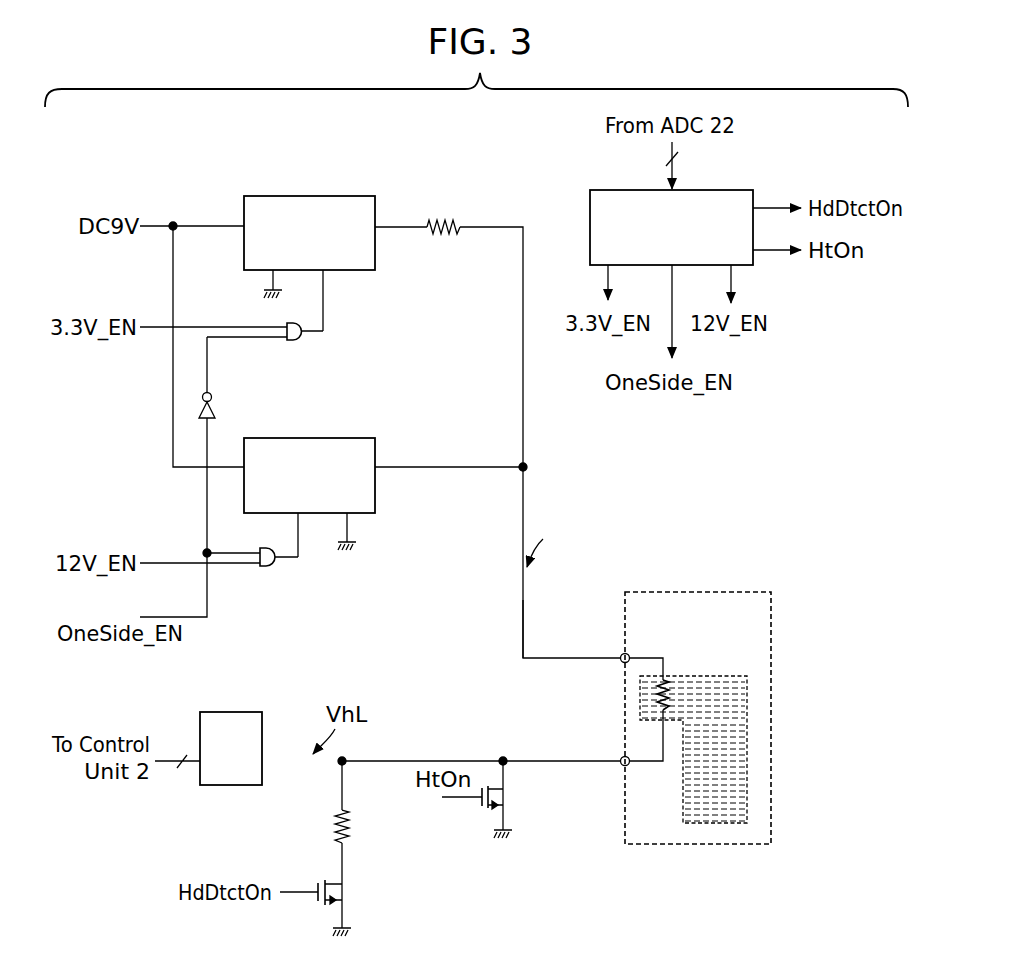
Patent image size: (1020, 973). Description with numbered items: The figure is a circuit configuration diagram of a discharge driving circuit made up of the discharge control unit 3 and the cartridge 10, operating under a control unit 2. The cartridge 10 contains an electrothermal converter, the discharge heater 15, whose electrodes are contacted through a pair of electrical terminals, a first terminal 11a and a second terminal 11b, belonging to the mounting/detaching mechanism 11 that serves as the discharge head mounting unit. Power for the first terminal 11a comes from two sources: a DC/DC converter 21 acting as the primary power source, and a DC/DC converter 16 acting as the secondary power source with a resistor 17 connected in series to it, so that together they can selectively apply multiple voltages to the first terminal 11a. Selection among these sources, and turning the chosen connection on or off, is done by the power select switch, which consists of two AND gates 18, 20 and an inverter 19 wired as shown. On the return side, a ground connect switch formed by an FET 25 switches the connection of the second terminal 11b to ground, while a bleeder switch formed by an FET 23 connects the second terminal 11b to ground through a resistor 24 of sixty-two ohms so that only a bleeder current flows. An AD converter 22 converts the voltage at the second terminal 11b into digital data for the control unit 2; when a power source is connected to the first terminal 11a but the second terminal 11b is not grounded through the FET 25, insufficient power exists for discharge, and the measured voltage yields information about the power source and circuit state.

The control unit 2 is at (725, 190).
The discharge control unit 3 is at (593, 505).
The cartridge 10 is at (776, 675).
The mounting/detaching mechanism 11 is at (598, 692).
The first terminal 11a is at (621, 664).
The second terminal 11b is at (621, 765).
The discharge heater 15 is at (669, 682).
The DC/DC converter 16 is at (305, 196).
The resistor 17 is at (441, 235).
The AND gate 18 is at (297, 341).
The inverter 19 is at (211, 395).
The AND gate 20 is at (271, 567).
The DC/DC converter 21 is at (305, 438).
The AD converter 22 is at (248, 712).
The FET 23 is at (348, 892).
The resistor 24 is at (349, 828).
The FET 25 is at (507, 797).